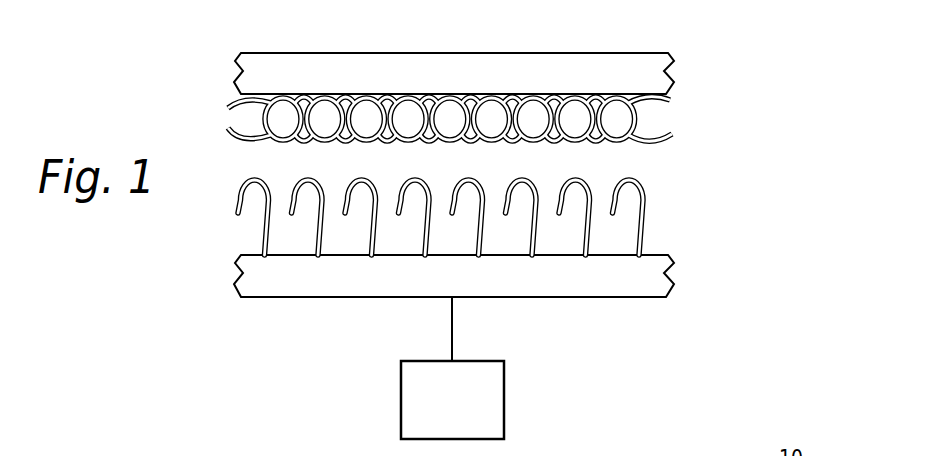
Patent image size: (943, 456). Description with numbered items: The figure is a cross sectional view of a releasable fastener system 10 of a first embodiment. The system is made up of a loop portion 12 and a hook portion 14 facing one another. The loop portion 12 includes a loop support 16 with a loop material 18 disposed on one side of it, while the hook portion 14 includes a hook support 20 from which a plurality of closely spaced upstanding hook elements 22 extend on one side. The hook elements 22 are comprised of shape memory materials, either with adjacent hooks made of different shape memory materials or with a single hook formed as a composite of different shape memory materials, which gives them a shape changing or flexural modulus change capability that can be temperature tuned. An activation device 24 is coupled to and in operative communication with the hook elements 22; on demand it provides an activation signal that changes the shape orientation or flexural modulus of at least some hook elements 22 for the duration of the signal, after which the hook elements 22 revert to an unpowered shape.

The releasable fastener system 10 is at (745, 64).
The loop portion 12 is at (186, 93).
The hook portion 14 is at (186, 257).
The loop support 16 is at (652, 80).
The loop material 18 is at (605, 145).
The hook support 20 is at (633, 282).
The hook elements 22 is at (645, 205).
The activation device 24 is at (504, 394).